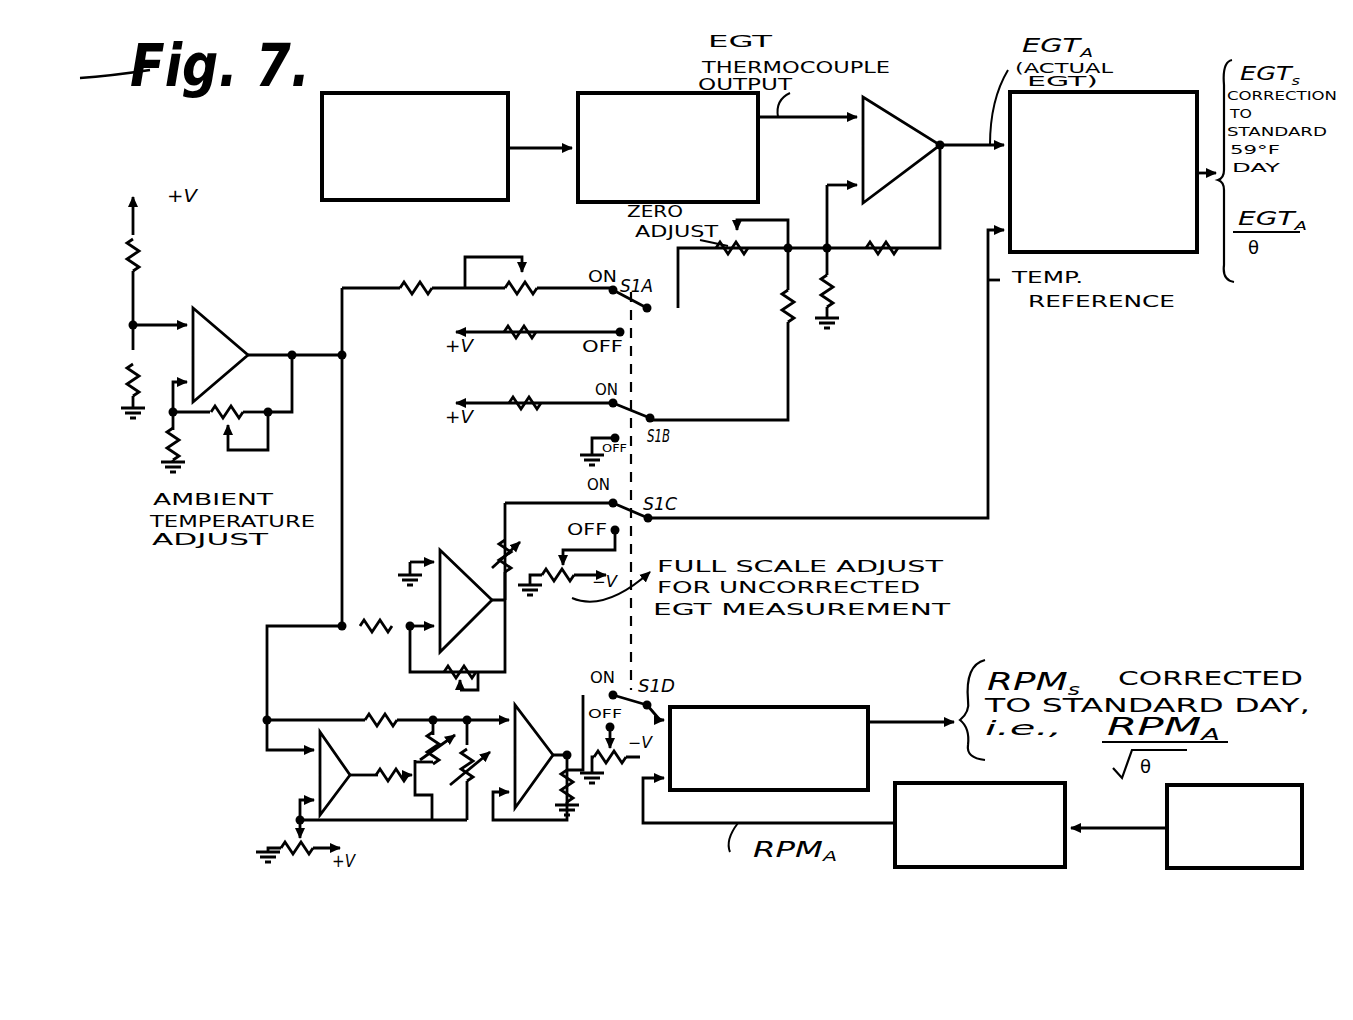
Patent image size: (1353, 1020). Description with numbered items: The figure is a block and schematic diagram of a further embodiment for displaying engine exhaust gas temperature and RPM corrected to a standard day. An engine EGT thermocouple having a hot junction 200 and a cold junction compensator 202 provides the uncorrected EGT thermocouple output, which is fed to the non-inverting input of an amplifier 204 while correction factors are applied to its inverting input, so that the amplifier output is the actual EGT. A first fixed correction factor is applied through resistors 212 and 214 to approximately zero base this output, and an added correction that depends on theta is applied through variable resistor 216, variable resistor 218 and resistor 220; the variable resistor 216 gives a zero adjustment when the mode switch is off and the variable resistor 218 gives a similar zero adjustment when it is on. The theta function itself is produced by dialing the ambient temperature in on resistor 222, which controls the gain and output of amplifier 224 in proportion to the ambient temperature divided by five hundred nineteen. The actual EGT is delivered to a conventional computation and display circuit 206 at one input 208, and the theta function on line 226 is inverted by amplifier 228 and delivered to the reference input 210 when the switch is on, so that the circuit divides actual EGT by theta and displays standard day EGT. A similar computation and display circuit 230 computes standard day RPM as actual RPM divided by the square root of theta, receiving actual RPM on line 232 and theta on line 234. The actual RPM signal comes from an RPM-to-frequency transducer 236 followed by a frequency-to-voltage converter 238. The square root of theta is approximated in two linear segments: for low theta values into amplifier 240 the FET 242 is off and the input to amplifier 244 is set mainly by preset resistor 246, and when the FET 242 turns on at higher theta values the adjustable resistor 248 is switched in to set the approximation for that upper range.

The hot junction 200 is at (405, 93).
The cold junction compensator 202 is at (665, 78).
The amplifier 204 is at (915, 98).
The computation and display circuit 206 is at (1126, 92).
The input 208 is at (963, 132).
The reference input 210 is at (988, 230).
The resistor 212 is at (535, 398).
The resistor 214 is at (795, 322).
The variable resistor 216 is at (728, 252).
The variable resistor 218 is at (548, 284).
The resistor 220 is at (408, 284).
The resistor 222 is at (228, 404).
The amplifier 224 is at (230, 338).
The line 226 is at (267, 668).
The amplifier 228 is at (505, 596).
The computation and display circuits 230 is at (868, 755).
The line 232 is at (643, 810).
The line 234 is at (662, 712).
The RPM-to-frequency converter or transducer 236 is at (1282, 792).
The frequency-to-voltage converter 238 is at (962, 786).
The amplifier 240 is at (352, 738).
The FET 242 is at (380, 782).
The amplifier 244 is at (555, 712).
The resistor 246 is at (468, 790).
The resistor 248 is at (418, 742).